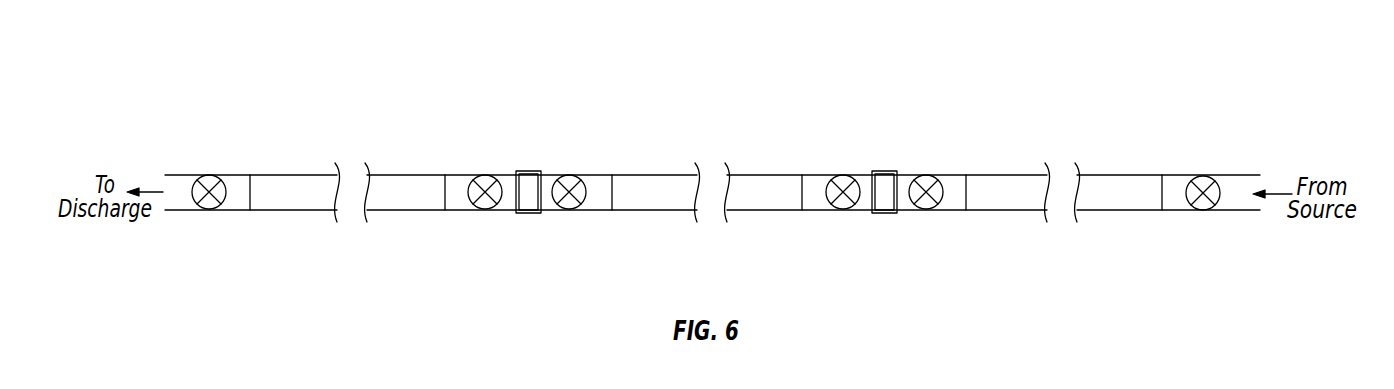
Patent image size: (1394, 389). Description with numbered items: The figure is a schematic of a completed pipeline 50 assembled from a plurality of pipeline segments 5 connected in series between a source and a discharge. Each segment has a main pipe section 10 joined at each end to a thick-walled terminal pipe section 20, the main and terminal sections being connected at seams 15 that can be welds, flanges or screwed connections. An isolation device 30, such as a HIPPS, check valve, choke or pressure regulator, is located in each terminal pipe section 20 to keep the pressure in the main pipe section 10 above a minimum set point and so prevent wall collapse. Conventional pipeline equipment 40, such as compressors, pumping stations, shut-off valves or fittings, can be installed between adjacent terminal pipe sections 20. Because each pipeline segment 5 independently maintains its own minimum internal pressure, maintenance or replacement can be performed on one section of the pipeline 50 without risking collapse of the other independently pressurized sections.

The pipeline 50 is at (1263, 112).
The isolation device 30 is at (923, 175).
The conventional pipeline equipment 40 is at (877, 171).
The main pipe section 10 is at (442, 162).
The pipeline segment 5 is at (543, 225).
The terminal pipe section 20 is at (897, 227).
The seam 15 is at (966, 212).